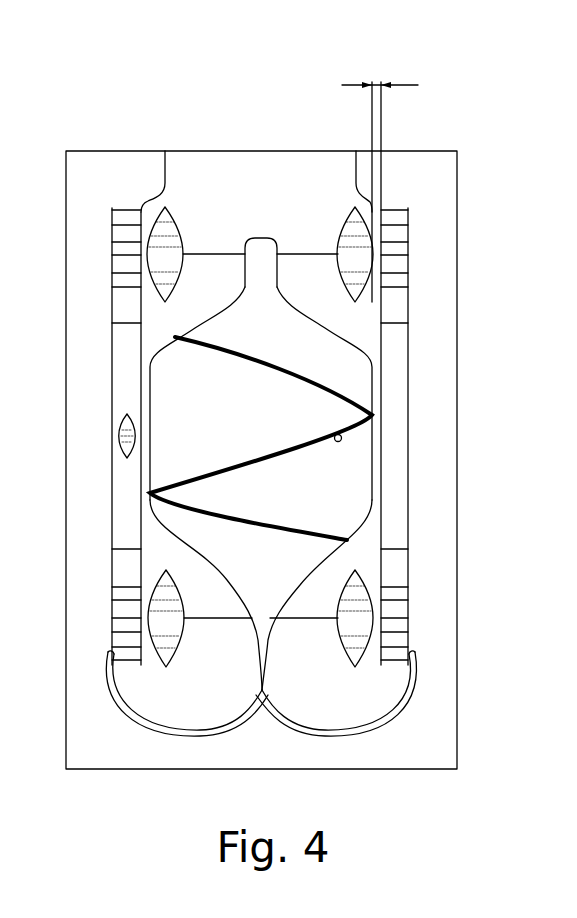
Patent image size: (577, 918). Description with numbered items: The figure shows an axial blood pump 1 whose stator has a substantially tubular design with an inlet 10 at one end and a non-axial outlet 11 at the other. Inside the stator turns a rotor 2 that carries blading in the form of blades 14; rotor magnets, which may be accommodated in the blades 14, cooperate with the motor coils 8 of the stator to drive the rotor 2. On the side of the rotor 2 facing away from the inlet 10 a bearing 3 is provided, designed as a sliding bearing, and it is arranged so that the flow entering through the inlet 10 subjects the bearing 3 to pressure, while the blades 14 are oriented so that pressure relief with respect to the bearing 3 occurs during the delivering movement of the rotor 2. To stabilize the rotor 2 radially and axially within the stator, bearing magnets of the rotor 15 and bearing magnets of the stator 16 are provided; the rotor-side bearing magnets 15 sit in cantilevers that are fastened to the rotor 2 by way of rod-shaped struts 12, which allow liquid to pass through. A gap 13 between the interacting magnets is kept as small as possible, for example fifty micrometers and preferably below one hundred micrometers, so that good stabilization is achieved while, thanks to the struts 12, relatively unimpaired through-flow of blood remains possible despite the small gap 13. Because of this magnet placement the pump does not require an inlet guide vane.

The axial blood pump 1 is at (516, 590).
The rotor 2 is at (335, 405).
The bearing 3 is at (262, 693).
The motor coils 8 is at (120, 442).
The inlet 10 is at (228, 165).
The non-axial outlet 11 is at (367, 693).
The struts 12 is at (225, 618).
The gap 13 is at (381, 85).
The blades 14 is at (345, 441).
The bearing magnets of the rotor 15 is at (360, 623).
The bearing magnets of the stator 16 is at (398, 608).